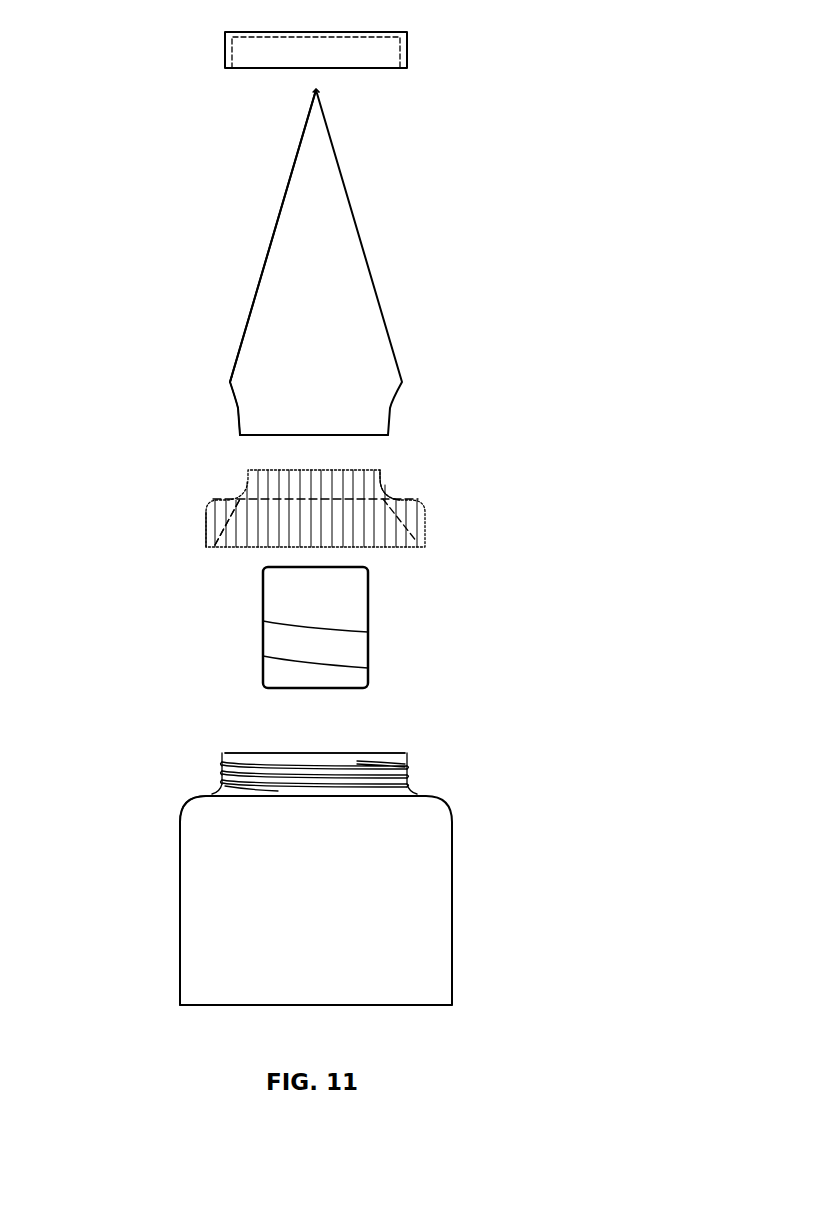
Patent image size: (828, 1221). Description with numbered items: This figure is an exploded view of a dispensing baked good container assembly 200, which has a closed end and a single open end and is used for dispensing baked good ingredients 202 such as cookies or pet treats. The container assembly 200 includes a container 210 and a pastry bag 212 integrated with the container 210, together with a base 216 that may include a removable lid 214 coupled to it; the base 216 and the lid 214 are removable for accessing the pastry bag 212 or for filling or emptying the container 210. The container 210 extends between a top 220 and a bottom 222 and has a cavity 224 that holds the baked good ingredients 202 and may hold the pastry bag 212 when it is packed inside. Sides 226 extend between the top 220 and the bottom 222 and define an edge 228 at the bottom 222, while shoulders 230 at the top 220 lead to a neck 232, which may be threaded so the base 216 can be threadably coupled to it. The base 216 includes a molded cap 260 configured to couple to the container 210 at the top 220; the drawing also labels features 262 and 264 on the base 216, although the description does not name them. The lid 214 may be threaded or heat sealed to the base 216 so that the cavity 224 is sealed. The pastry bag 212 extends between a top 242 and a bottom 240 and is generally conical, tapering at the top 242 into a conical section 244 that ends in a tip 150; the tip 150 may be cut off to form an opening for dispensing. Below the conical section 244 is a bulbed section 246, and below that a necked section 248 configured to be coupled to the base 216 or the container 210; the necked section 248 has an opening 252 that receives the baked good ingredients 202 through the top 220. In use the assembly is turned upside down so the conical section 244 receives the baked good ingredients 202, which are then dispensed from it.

The dispensing baked good container assembly 200 is at (552, 208).
The container 210 is at (333, 872).
The pastry bag 212 is at (389, 324).
The removable lid 214 is at (408, 51).
The base 216 is at (447, 522).
The baked good ingredients 202 is at (370, 635).
The tip 150 is at (314, 91).
The top 242 is at (320, 87).
The conical section 244 is at (340, 220).
The bulbed section 246 is at (230, 385).
The necked section 248 is at (238, 424).
The opening 252 is at (250, 437).
The bottom 240 is at (364, 436).
The cap top portion 262 is at (388, 515).
The cap inner recess 264 is at (228, 505).
The molded cap 260 is at (206, 525).
The top 220 is at (385, 753).
The cavity 224 is at (245, 745).
The neck 232 is at (222, 755).
The shoulders 230 is at (186, 800).
The sides 226 is at (180, 913).
The edge 228 is at (180, 1008).
The bottom 222 is at (415, 1006).